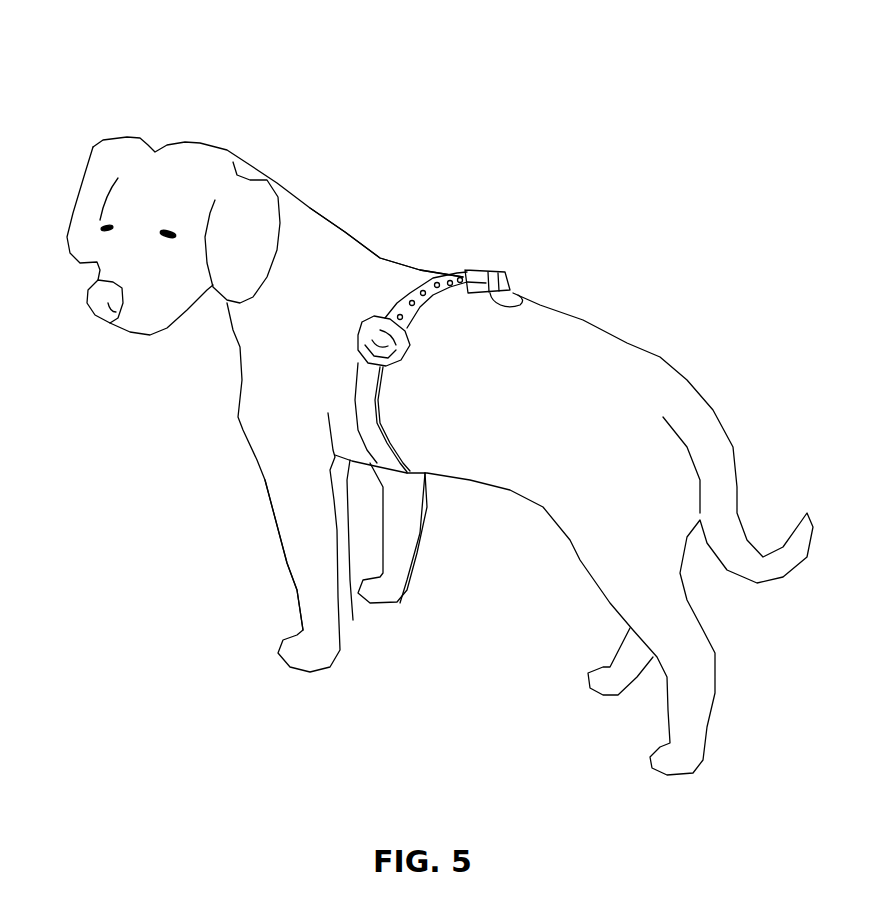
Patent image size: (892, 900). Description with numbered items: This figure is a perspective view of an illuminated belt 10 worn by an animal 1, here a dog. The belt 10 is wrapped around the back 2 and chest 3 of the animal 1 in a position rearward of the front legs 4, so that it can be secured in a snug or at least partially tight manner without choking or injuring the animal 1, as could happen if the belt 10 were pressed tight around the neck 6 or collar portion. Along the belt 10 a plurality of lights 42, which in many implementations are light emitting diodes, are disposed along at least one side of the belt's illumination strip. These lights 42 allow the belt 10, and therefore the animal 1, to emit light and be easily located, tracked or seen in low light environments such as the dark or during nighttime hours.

The animal 1 is at (288, 120).
The back 2 is at (400, 267).
The chest 3 is at (353, 620).
The front legs 4 is at (287, 563).
The neck 6 is at (237, 347).
The belt 10 is at (508, 243).
The lights 42 is at (520, 291).